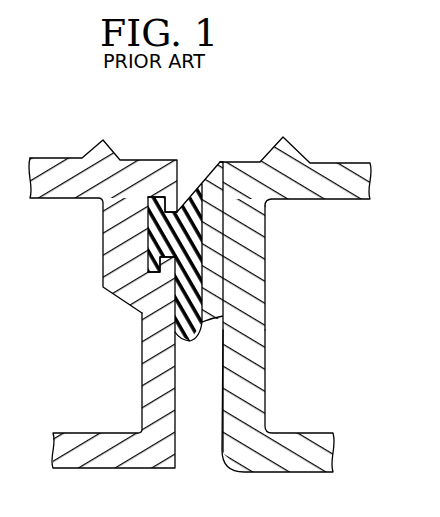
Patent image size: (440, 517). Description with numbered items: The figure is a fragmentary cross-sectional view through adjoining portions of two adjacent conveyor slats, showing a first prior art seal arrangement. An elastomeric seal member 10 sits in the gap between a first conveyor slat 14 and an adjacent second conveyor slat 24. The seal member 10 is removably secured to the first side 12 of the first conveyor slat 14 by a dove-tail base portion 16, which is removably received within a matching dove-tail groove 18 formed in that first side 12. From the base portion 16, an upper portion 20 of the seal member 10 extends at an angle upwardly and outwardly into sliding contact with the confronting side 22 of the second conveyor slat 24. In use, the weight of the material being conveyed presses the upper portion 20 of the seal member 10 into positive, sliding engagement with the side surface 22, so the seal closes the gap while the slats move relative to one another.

The seal member 10 is at (198, 232).
The first side 12 is at (173, 390).
The first conveyor slat 14 is at (64, 158).
The dove-tail base portion 16 is at (160, 215).
The dove-tail groove 18 is at (150, 247).
The upper portion 20 is at (205, 175).
The confronting side 22 is at (223, 349).
The second conveyor slat 24 is at (348, 163).